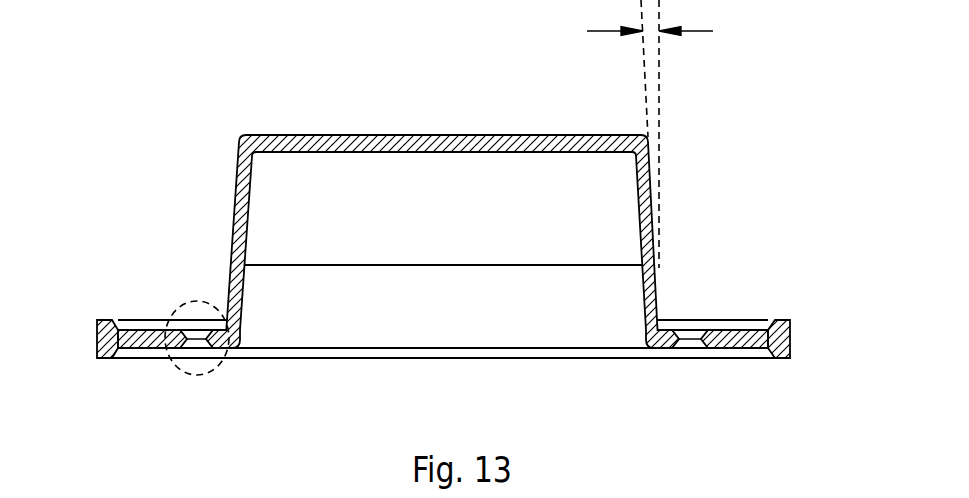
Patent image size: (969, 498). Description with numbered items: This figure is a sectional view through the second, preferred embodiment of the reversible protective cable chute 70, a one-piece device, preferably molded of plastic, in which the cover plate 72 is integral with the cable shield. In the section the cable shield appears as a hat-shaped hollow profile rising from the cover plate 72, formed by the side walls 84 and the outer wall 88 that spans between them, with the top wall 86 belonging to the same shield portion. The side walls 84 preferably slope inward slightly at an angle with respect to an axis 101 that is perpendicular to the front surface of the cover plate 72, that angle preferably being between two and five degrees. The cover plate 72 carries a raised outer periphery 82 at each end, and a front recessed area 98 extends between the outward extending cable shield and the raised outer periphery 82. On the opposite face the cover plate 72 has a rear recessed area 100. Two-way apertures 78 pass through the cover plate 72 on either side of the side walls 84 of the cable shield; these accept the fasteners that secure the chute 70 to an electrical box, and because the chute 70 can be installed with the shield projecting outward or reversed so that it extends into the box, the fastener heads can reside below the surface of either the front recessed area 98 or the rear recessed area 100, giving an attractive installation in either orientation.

The reversible protective cable chute 70 is at (152, 150).
The cover plate 72 is at (152, 340).
The two-way apertures 78 is at (197, 343).
The raised outer periphery 82 is at (108, 320).
The side wall 84 is at (240, 232).
The top wall 86 is at (457, 313).
The outer wall 88 is at (443, 150).
The front recessed area 98 is at (720, 327).
The rear recessed area 100 is at (717, 353).
The axis 101 is at (660, 90).